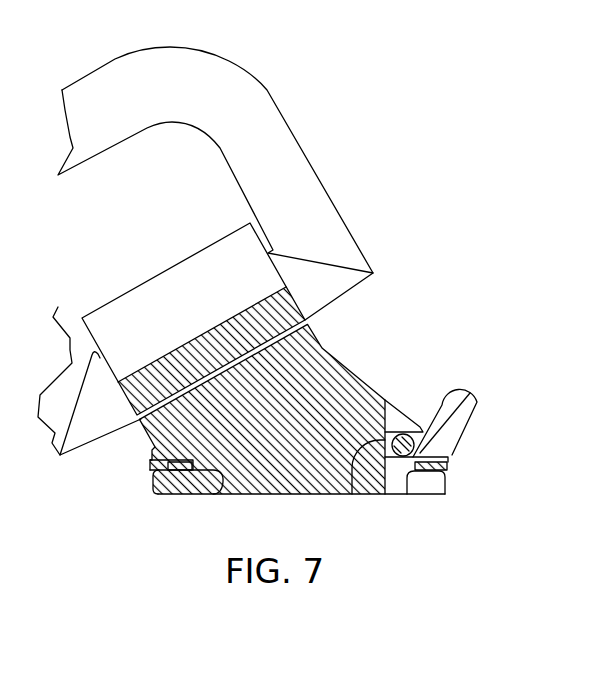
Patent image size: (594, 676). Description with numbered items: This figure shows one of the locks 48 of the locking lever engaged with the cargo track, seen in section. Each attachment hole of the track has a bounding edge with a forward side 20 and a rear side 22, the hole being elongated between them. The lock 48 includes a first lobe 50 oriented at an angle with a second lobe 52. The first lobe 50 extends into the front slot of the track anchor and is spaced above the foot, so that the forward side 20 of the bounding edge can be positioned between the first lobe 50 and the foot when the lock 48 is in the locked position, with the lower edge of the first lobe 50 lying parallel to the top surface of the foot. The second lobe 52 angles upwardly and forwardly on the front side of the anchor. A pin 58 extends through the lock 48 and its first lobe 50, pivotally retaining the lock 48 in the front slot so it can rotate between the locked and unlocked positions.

The forward side 20 is at (405, 495).
The rear side 22 is at (213, 495).
The lock 48 is at (478, 365).
The first lobe 50 is at (403, 434).
The second lobe 52 is at (478, 416).
The pin 58 is at (353, 495).